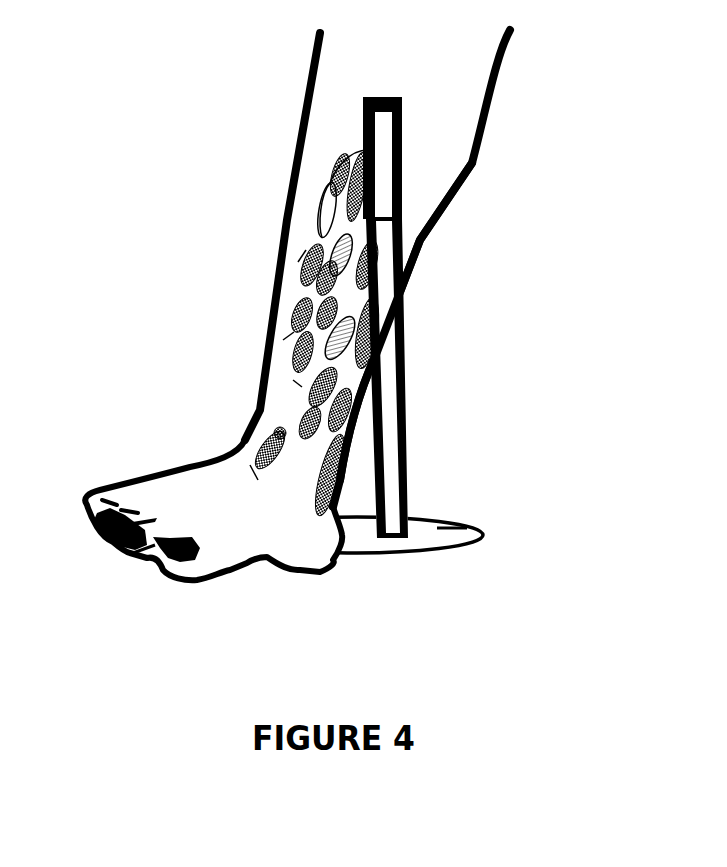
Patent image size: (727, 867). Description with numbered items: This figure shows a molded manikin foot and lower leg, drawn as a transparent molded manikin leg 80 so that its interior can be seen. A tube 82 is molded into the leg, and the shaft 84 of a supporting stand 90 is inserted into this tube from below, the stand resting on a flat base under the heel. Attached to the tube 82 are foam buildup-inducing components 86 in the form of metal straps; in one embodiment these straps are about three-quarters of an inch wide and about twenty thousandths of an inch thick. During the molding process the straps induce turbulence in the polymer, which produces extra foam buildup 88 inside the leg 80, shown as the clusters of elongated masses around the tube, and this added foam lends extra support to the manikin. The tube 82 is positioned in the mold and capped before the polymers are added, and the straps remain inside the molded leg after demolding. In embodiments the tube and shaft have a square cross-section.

The molded manikin leg 80 is at (298, 88).
The tube 82 is at (397, 177).
The shaft 84 is at (392, 353).
The foam buildup-inducing components 86 is at (320, 220).
The extra foam buildup 88 is at (322, 383).
The supporting stand 90 is at (483, 528).